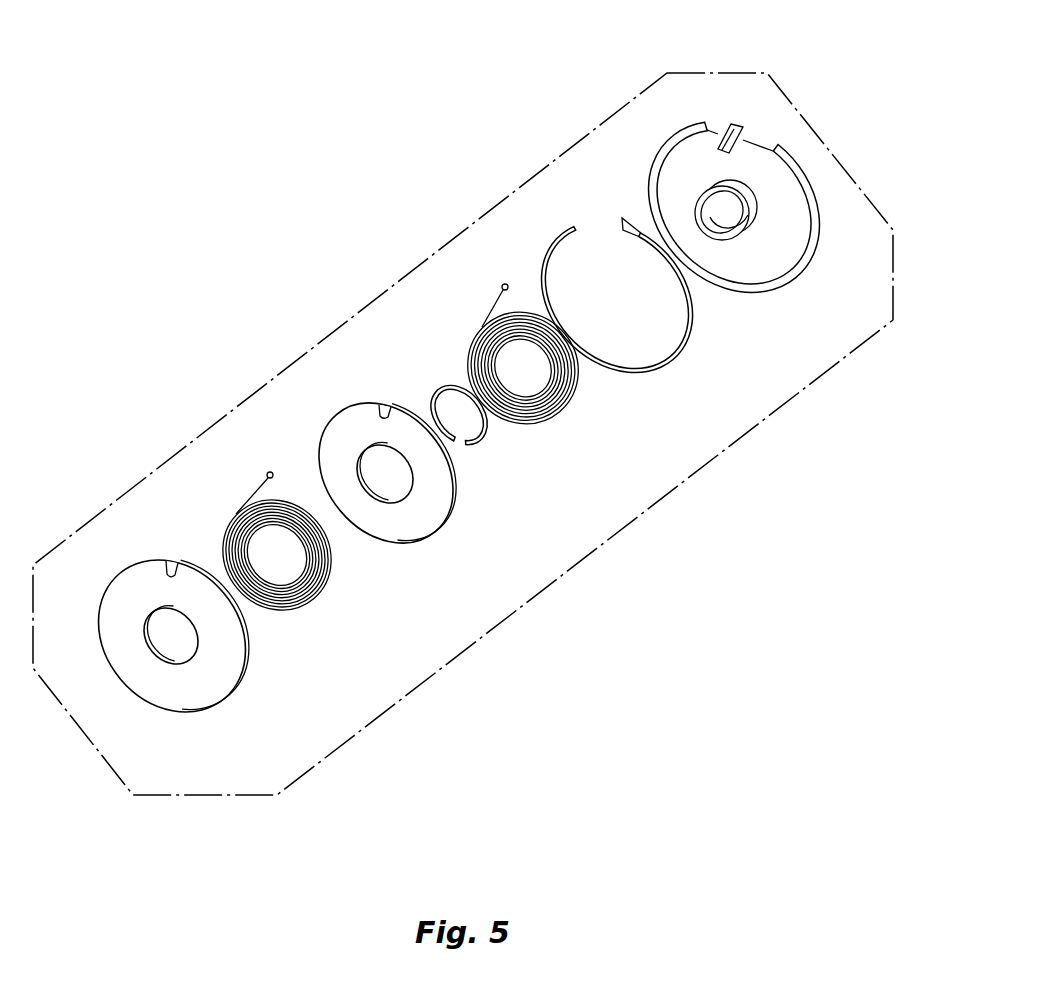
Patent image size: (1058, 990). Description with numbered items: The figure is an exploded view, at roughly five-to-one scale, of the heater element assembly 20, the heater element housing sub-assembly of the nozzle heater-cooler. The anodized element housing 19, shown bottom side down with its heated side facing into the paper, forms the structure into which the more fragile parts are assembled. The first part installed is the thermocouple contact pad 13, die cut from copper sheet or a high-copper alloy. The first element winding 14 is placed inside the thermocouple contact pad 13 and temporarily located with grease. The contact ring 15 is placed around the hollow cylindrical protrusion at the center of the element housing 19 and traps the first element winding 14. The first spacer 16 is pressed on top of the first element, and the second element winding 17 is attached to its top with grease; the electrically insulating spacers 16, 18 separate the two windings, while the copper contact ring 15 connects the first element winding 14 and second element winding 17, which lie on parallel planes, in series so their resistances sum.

The thermocouple contact pad 13 is at (670, 363).
The first element winding 14 is at (567, 407).
The contact ring 15 is at (478, 440).
The first spacer 16 is at (450, 503).
The second element winding 17 is at (317, 573).
The electrically insulating spacer 18 is at (242, 658).
The element housing 19 is at (805, 265).
The heater element assembly 20 is at (463, 410).